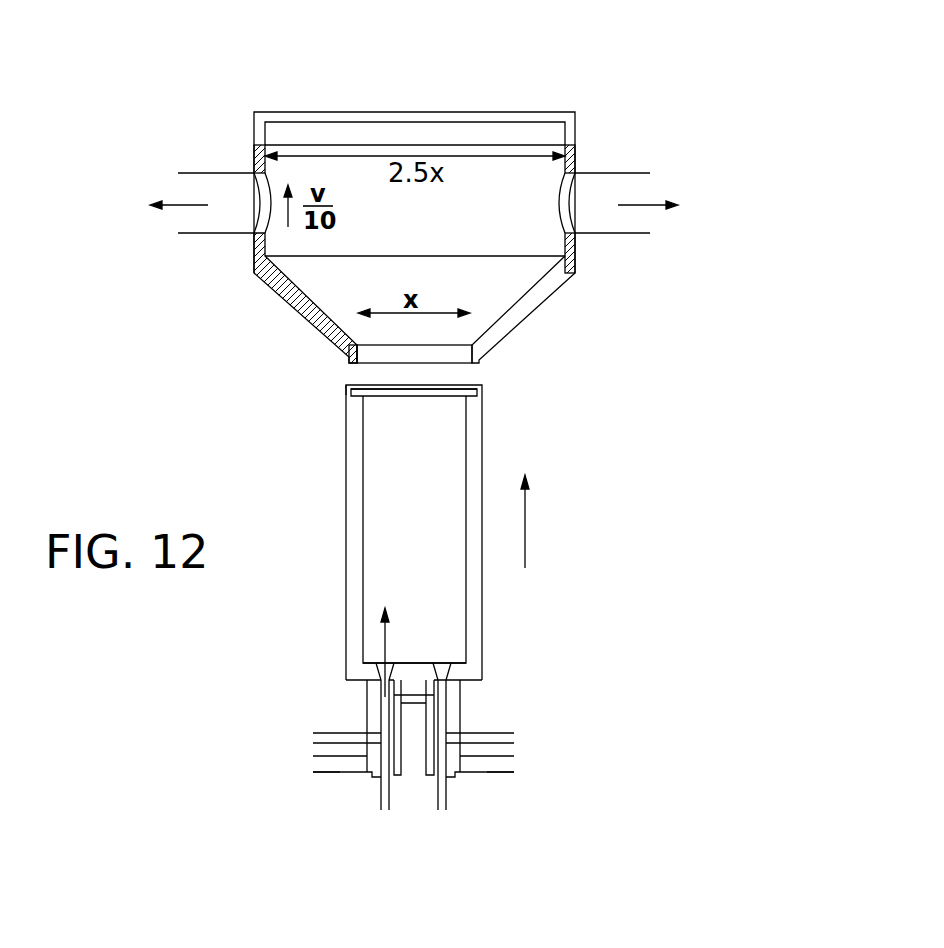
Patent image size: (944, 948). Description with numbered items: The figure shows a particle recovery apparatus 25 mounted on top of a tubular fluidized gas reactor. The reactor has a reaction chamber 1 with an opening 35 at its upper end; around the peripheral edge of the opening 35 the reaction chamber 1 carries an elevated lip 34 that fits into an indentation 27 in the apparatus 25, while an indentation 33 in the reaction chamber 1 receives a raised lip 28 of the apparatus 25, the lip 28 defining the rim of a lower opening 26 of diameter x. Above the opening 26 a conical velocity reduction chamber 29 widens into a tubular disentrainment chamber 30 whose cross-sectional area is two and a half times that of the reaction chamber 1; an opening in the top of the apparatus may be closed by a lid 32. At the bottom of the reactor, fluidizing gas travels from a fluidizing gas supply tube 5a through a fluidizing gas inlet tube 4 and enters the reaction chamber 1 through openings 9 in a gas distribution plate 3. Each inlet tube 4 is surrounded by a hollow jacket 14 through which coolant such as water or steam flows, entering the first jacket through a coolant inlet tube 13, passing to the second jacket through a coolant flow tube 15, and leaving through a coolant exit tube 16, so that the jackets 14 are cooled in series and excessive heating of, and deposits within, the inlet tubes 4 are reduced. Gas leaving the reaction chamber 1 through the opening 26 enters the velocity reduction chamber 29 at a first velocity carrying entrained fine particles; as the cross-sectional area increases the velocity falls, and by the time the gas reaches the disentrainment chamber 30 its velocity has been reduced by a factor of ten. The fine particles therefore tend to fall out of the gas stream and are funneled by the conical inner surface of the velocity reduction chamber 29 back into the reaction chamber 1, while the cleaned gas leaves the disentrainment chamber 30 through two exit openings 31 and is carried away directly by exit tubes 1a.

The reaction chamber 1 is at (483, 452).
The exit tubes 1a is at (200, 173).
The gas distribution plate 3 is at (418, 663).
The fluidizing gas inlet tube 4 is at (368, 697).
The fluidizing gas supply tube 5a is at (325, 732).
The openings 9 is at (440, 667).
The coolant inlet tube 13 is at (330, 773).
The jacket 14 is at (462, 713).
The coolant flow tube 15 is at (413, 700).
The coolant exit tube 16 is at (497, 773).
The apparatus 25 is at (553, 308).
The opening 26 is at (433, 352).
The indentation 27 is at (352, 356).
The raised lip 28 is at (350, 364).
The conical velocity reduction chamber 29 is at (282, 290).
The tubular disentrainment chamber 30 is at (578, 168).
The openings 31 is at (260, 212).
The lid 32 is at (494, 112).
The indentation 33 is at (457, 393).
The elevated lip 34 is at (486, 387).
The opening 35 is at (392, 392).